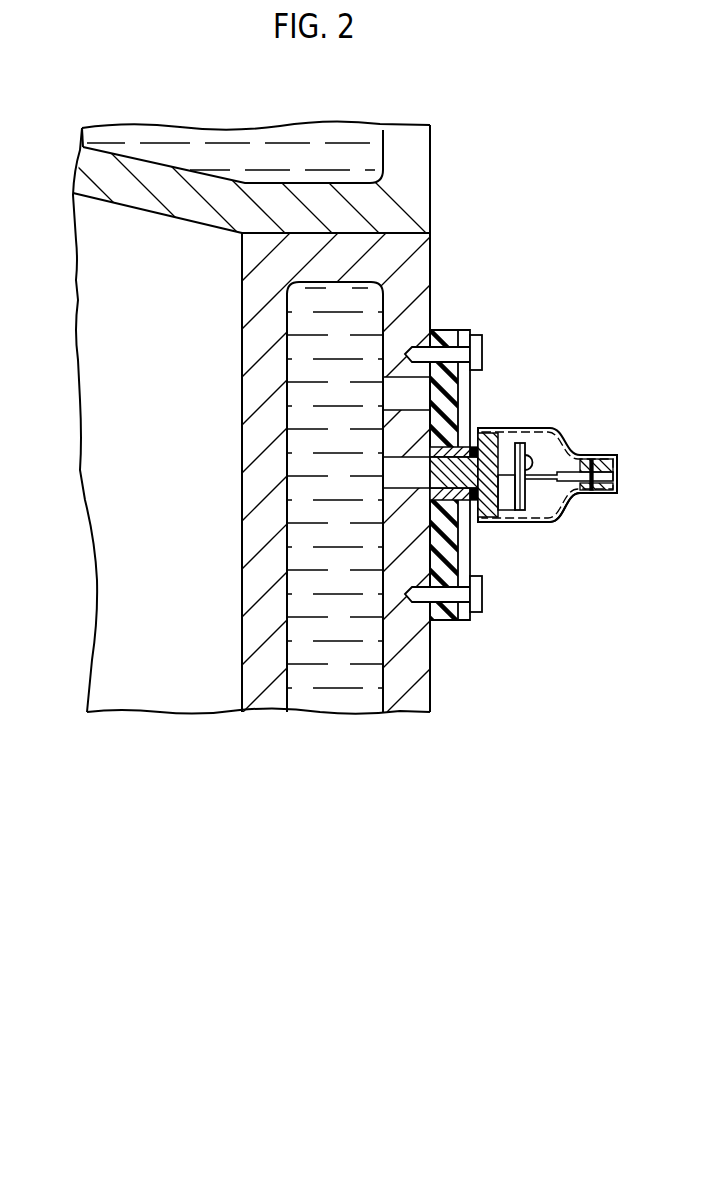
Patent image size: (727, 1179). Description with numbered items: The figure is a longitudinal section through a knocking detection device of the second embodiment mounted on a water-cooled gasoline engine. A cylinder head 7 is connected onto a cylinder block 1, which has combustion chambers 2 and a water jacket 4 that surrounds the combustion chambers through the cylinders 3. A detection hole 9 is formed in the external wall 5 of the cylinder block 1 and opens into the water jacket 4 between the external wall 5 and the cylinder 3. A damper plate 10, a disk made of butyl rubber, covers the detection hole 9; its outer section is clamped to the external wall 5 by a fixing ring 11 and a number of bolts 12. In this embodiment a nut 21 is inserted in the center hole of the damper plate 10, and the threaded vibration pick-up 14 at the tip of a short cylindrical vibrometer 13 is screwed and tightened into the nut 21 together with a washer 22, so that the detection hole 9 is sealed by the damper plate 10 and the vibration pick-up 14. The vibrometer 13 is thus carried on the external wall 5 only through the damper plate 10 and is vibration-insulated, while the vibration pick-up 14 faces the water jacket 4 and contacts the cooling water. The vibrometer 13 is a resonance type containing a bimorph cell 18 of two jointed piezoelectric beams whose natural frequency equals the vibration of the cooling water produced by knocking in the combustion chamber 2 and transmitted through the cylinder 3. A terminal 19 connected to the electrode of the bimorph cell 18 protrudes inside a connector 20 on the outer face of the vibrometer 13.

The cylinder block 1 is at (447, 248).
The combustion chamber 2 is at (110, 422).
The cylinder 3 is at (247, 352).
The water jacket 4 is at (338, 703).
The external wall 5 is at (425, 303).
The cylinder head 7 is at (452, 163).
The detection hole 9 is at (422, 402).
The damper plate 10 is at (463, 520).
The fixing ring 11 is at (468, 332).
The bolt 12 is at (482, 343).
The vibrometer 13 is at (574, 424).
The vibration pick-up 14 is at (478, 522).
The bimorph cell 18 is at (565, 512).
The terminal 19 is at (612, 457).
The connector 20 is at (618, 462).
The nut 21 is at (478, 432).
The washer 22 is at (490, 430).